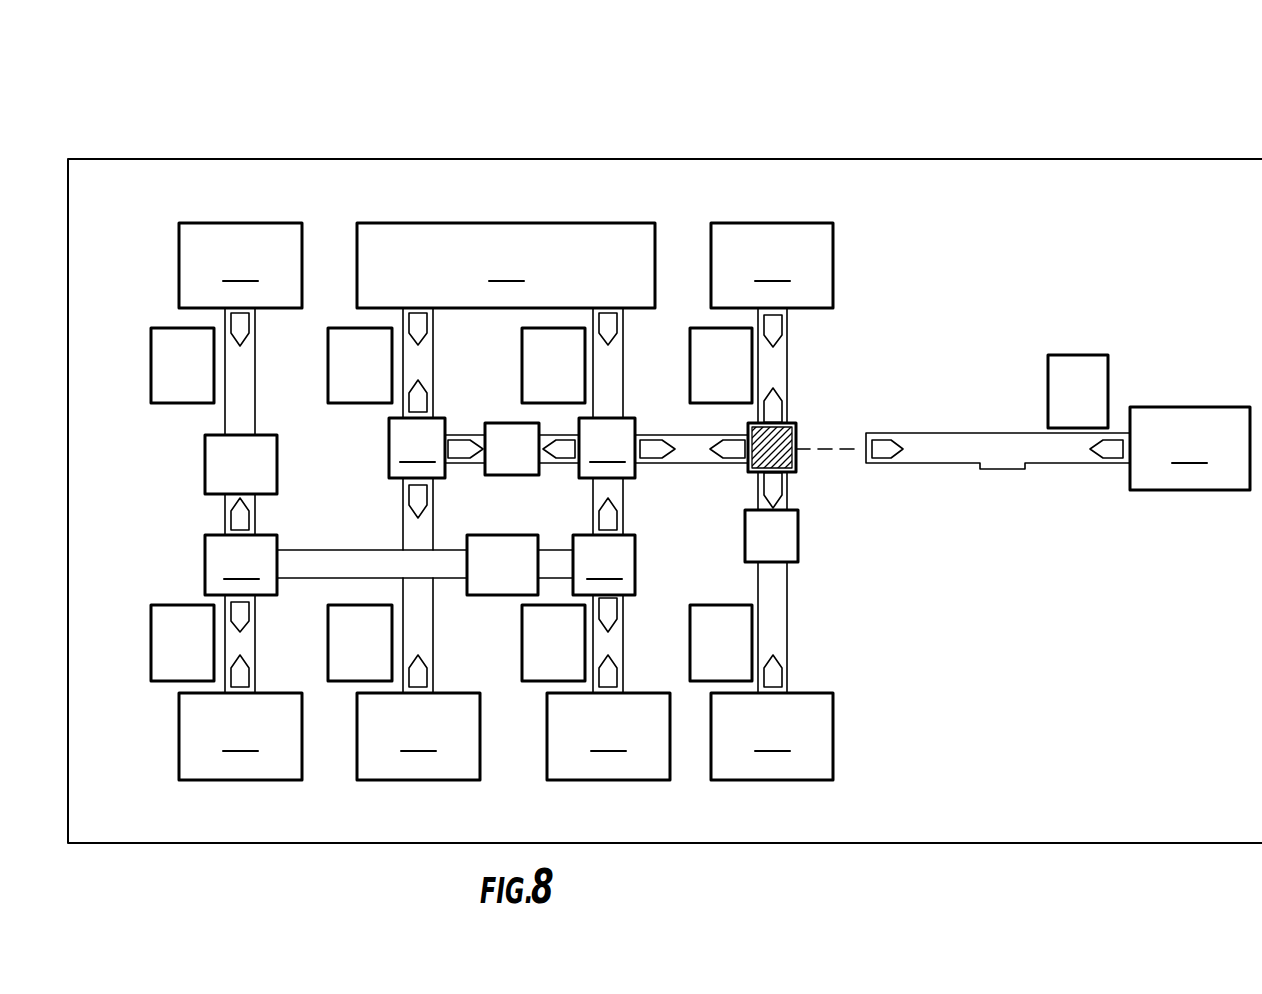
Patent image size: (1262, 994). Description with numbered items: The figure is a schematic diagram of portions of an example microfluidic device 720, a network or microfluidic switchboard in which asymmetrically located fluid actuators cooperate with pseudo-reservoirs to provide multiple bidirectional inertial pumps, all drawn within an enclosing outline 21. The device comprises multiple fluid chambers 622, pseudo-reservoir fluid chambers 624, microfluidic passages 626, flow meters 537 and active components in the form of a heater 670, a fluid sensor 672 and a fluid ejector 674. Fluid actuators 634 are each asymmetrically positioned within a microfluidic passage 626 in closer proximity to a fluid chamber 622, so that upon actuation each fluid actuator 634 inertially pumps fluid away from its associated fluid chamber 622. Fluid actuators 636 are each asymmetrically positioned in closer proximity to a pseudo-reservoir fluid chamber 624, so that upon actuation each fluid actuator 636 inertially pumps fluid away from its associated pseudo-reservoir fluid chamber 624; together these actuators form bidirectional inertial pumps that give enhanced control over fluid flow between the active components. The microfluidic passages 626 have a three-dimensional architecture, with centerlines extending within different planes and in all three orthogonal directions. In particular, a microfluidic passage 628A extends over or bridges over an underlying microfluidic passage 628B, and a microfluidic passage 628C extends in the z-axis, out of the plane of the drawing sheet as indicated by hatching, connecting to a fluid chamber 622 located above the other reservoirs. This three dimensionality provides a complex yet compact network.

The microfluidic device 720 is at (217, 89).
The vehicle boundary 21 is at (1102, 159).
The fluid chamber 622 is at (714, 501).
The flow meter 537 is at (151, 375).
The pseudo-reservoir fluid chamber 624 is at (800, 470).
The microfluidic passage 626 is at (787, 369).
The microfluidic passage 628A is at (352, 550).
The microfluidic passage 628B is at (433, 690).
The microfluidic passage 628C is at (800, 443).
The fluid actuator 634 is at (231, 330).
The fluid actuator 636 is at (780, 405).
The heater 670 is at (510, 535).
The fluid sensor 672 is at (500, 423).
The fluid ejector 674 is at (205, 479).